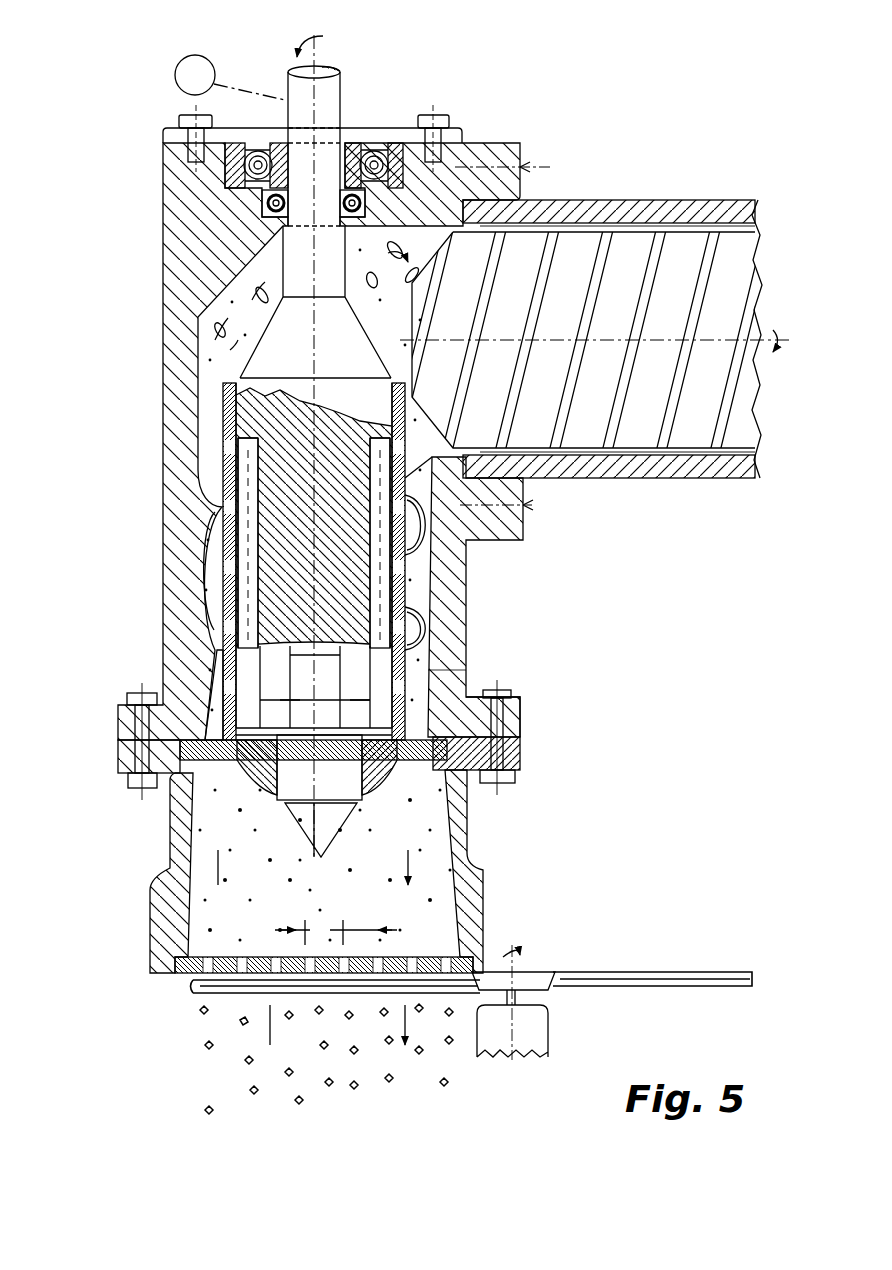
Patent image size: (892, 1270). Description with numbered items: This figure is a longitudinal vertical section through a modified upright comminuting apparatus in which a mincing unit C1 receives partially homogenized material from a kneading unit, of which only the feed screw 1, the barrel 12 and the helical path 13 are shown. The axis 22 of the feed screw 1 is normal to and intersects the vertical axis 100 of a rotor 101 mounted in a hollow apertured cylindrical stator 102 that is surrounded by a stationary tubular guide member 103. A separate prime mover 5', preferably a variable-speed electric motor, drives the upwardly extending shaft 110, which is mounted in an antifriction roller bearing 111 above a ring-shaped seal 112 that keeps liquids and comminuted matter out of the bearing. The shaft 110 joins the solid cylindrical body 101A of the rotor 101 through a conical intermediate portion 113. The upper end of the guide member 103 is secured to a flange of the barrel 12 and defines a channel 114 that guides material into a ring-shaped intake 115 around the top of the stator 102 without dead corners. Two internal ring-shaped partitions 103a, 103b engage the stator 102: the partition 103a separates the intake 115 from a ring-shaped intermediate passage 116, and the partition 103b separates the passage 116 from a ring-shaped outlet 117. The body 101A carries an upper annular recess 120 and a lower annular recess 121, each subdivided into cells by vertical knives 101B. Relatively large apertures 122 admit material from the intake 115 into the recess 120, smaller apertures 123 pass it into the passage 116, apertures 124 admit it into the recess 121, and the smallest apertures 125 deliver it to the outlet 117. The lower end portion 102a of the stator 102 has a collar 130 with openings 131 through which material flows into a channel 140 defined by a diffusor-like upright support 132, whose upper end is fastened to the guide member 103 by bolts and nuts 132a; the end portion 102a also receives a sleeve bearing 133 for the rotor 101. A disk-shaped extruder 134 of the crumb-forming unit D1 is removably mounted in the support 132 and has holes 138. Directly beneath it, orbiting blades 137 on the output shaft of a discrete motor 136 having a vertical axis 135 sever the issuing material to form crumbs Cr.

The feed screw 1 is at (507, 267).
The barrel 12 is at (640, 210).
The helical path 13 is at (577, 235).
The axis of the feed screw 22 is at (607, 340).
The prime mover 5' is at (230, 64).
The vertical axis of the rotor 100 is at (323, 34).
The shaft 110 is at (327, 97).
The antifriction roller bearing 111 is at (376, 153).
The ring-shaped seal 112 is at (262, 205).
The conical intermediate portion 113 is at (283, 322).
The channel 114 is at (260, 262).
The tubular guide member 103 is at (172, 322).
The partition 103a is at (410, 500).
The partition 103b is at (415, 637).
The stator 102 is at (223, 400).
The lower end portion of the stator 102a is at (440, 762).
The rotor 101 is at (250, 423).
The solid cylindrical body 101A is at (382, 403).
The vertical knives 101B is at (305, 740).
The ring-shaped intake 115 is at (208, 447).
The ring-shaped intermediate passage 116 is at (205, 565).
The ring-shaped outlet 117 is at (221, 677).
The upper annular recess 120 is at (228, 471).
The lower annular recess 121 is at (250, 608).
The apertures 122 is at (398, 478).
The apertures 123 is at (413, 545).
The apertures 124 is at (403, 612).
The apertures 125 is at (402, 672).
The collar 130 is at (513, 760).
The openings 131 is at (467, 790).
The support 132 is at (185, 842).
The bolts and nuts 132a is at (513, 697).
The sleeve bearing 133 is at (473, 873).
The extruder 134 is at (183, 977).
The vertical axis 135 is at (513, 962).
The motor 136 is at (532, 1028).
The blades 137 is at (635, 970).
The holes 138 is at (277, 970).
The channel 140 is at (275, 917).
The mincing unit C1 is at (133, 662).
The crumb-forming unit D1 is at (152, 985).
The crumbs Cr is at (352, 1090).